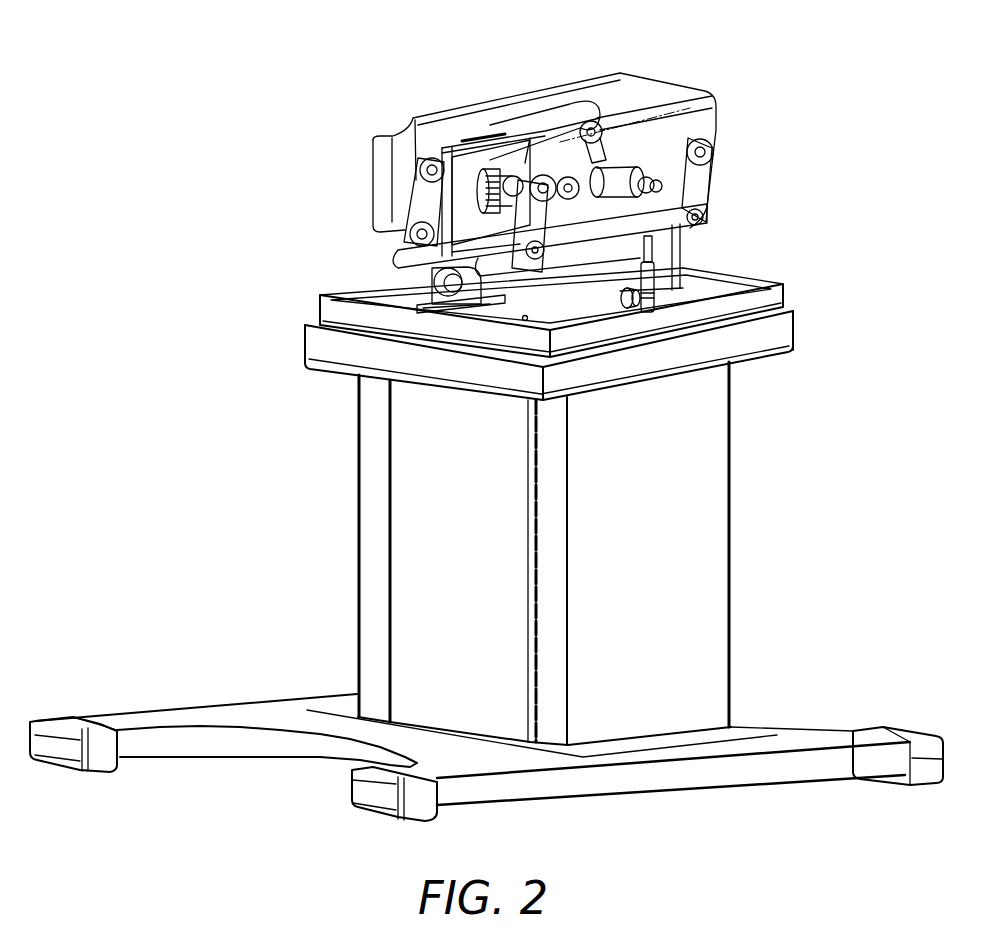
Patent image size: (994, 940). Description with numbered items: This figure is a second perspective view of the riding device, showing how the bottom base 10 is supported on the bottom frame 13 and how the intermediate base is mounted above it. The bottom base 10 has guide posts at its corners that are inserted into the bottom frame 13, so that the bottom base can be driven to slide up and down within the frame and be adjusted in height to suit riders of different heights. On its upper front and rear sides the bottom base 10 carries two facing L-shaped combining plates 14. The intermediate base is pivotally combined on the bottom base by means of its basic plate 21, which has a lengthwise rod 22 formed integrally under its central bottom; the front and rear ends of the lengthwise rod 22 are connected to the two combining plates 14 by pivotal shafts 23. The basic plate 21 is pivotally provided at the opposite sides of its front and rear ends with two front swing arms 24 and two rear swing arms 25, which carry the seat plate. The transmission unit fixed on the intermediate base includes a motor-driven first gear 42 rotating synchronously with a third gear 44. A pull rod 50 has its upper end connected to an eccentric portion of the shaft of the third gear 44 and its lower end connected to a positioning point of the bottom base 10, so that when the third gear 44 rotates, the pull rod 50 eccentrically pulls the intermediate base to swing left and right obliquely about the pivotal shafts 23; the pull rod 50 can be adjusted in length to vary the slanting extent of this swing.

The bottom base 10 is at (767, 300).
The bottom frame 13 is at (808, 738).
The L-shaped combining plate 14 is at (310, 337).
The basic plate 21 is at (430, 258).
The lengthwise rod 22 is at (490, 315).
The pivotal shaft 23 is at (447, 283).
The front swing arm 24 is at (697, 178).
The rear swing arm 25 is at (430, 193).
The first gear 42 is at (485, 172).
The third gear 44 is at (592, 130).
The pull rod 50 is at (683, 270).